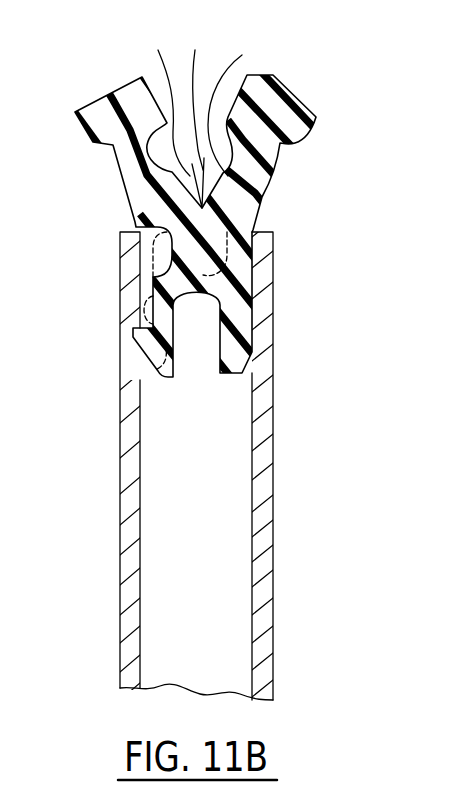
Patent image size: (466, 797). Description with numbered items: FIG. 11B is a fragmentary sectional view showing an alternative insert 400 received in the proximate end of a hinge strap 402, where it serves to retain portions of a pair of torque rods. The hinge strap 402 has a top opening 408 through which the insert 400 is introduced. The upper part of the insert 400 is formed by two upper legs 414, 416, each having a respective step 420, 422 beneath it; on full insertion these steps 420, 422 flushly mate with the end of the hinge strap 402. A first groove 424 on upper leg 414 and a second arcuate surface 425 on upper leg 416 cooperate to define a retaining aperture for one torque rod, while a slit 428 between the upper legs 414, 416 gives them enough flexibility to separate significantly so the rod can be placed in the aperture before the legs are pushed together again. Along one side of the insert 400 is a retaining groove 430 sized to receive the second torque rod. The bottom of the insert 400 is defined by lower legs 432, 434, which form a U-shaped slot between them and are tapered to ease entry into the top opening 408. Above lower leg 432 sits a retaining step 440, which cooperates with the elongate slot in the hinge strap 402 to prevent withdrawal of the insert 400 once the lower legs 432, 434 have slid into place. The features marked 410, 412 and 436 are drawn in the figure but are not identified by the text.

The insert 400 is at (306, 195).
The hinge strap 402 is at (263, 617).
The top opening 408 is at (258, 250).
The inner wall of housing 410 is at (268, 403).
The stem of connector 412 is at (236, 301).
The upper leg 414 is at (93, 108).
The upper leg 416 is at (280, 110).
The step 420 is at (105, 159).
The step 422 is at (300, 140).
The first groove 424 is at (143, 103).
The second arcuate surface 425 is at (249, 102).
The slit 428 is at (193, 109).
The retaining groove 430 is at (145, 248).
The lower leg 432 is at (152, 346).
The lower leg 434 is at (236, 360).
The slot 436 is at (218, 358).
The retaining step 440 is at (134, 300).